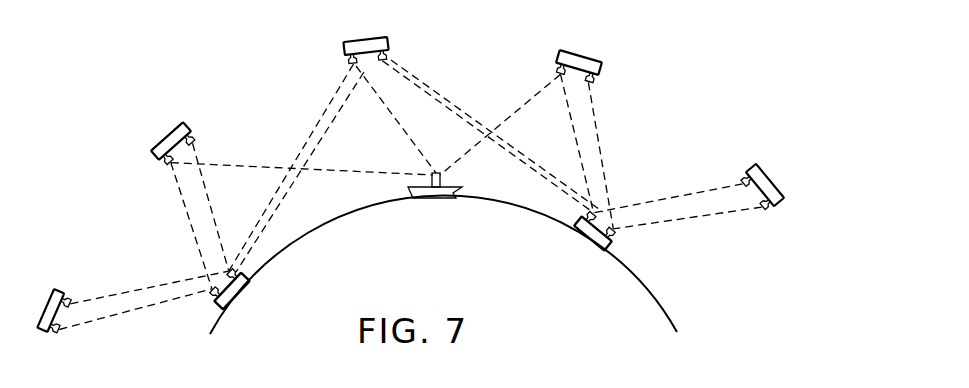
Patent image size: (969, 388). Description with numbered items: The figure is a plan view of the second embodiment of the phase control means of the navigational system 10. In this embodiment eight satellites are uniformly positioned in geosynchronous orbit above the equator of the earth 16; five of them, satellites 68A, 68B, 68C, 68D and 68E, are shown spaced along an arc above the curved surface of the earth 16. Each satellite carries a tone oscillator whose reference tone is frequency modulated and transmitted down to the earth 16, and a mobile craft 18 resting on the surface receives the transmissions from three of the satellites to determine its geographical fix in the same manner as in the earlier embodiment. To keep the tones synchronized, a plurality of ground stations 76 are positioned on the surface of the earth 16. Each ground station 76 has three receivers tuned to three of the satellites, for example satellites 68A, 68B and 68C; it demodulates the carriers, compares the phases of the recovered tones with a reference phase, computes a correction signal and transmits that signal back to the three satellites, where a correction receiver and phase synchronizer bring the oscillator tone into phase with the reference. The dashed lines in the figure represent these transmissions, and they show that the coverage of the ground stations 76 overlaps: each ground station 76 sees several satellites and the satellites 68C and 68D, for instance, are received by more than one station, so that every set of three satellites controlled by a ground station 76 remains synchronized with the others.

The navigational system 10 is at (654, 84).
The earth 16 is at (455, 287).
The mobile craft 18 is at (408, 190).
The satellite 68A is at (57, 289).
The satellite 68B is at (165, 137).
The satellite 68C is at (363, 40).
The satellite 68D is at (585, 30).
The satellite 68E is at (769, 137).
The ground station 76 is at (218, 304).